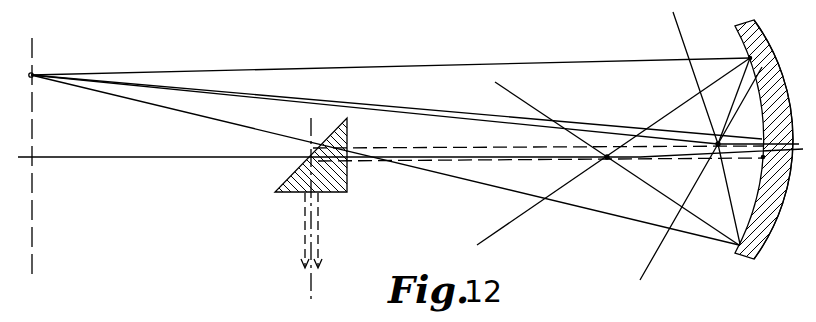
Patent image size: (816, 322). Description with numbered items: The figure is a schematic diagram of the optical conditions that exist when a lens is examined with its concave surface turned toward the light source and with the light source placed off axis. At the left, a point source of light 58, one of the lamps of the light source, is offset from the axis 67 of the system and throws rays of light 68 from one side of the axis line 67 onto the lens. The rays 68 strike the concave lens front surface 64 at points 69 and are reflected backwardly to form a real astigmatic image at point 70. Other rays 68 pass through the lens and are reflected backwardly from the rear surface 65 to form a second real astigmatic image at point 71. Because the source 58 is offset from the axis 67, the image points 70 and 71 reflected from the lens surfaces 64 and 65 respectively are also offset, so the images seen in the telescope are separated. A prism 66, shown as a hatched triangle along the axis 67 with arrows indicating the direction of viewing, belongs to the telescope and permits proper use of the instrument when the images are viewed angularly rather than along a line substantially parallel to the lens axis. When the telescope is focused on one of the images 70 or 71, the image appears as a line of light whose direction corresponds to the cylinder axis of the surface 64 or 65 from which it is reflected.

The point source of light 58 is at (33, 74).
The lens front surface 64 is at (743, 43).
The lens rear surface 65 is at (770, 228).
The prism 66 is at (348, 193).
The axis of the system 67 is at (144, 158).
The rays of light 68 is at (427, 66).
The points of contact on lens surface 69 is at (748, 62).
The image point of front surface 70 is at (607, 159).
The image point of rear surface 71 is at (718, 141).